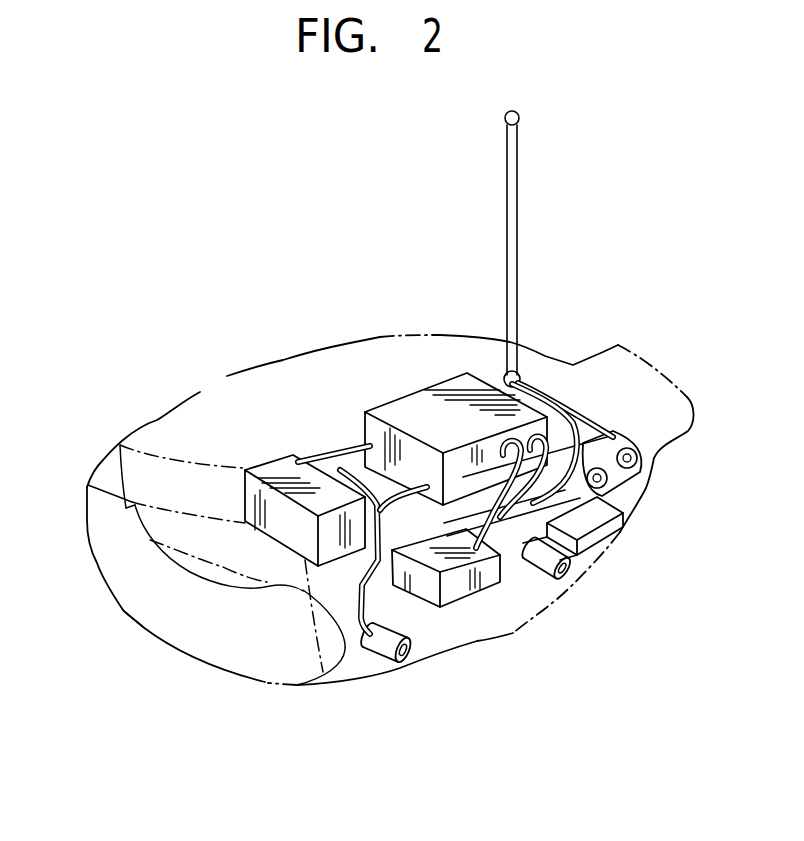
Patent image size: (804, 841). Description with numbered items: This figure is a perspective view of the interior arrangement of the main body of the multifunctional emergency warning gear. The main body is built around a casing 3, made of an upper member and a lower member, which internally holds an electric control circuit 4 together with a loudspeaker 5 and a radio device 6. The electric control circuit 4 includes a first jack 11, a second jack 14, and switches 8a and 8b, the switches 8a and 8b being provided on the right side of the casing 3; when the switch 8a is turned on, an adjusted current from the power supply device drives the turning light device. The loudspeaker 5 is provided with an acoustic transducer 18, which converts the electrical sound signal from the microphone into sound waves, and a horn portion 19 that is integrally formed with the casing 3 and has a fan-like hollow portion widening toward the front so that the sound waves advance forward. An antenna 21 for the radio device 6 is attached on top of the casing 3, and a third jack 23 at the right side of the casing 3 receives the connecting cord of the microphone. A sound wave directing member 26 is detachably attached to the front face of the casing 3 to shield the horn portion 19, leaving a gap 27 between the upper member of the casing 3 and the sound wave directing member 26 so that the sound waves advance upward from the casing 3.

The casing 3 is at (317, 350).
The electric control circuit 4 is at (446, 380).
The loudspeaker 5 is at (232, 441).
The radio device 6 is at (466, 595).
The switch 8a is at (620, 490).
The switch 8b is at (640, 460).
The first jack 11 is at (625, 523).
The second jack 14 is at (546, 585).
The acoustic transducer 18 is at (283, 466).
The horn portion 19 is at (160, 476).
The antenna 21 is at (519, 173).
The third jack 23 is at (383, 652).
The sound wave directing member 26 is at (143, 617).
The gap 27 is at (150, 540).